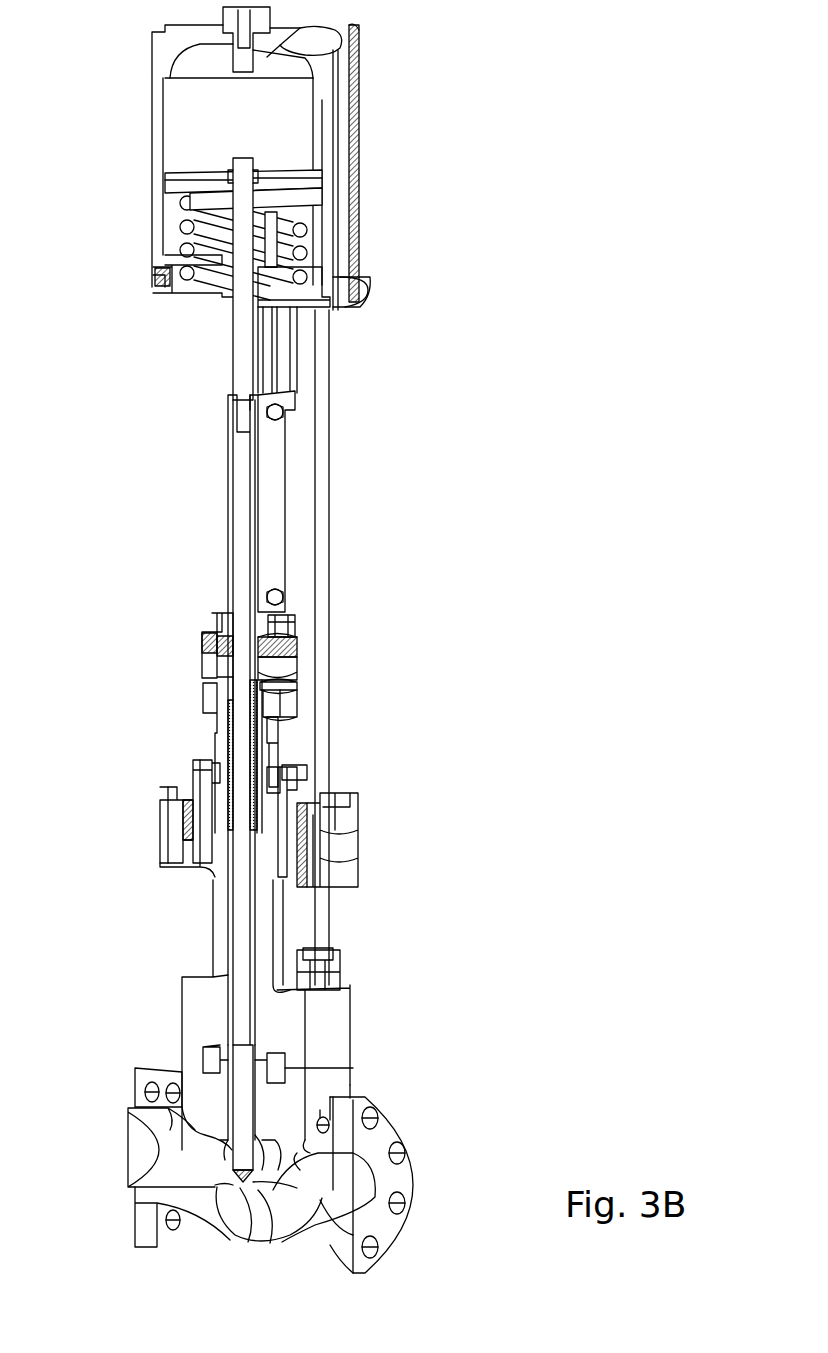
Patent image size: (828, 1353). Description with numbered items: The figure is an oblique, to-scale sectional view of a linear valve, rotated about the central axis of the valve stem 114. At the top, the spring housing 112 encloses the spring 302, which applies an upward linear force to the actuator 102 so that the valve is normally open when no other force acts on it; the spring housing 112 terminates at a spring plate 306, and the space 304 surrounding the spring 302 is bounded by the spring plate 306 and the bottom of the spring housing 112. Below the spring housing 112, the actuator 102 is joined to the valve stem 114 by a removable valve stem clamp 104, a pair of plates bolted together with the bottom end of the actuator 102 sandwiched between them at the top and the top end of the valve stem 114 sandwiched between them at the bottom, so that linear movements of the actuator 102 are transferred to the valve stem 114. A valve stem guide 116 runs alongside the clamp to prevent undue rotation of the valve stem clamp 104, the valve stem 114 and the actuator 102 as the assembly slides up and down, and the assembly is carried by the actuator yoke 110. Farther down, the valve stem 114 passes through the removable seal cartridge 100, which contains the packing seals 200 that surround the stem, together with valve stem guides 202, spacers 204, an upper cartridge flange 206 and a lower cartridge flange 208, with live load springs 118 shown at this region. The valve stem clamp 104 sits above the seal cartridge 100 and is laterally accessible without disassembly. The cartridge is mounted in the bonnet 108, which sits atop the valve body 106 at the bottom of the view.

The seal cartridge 100 is at (448, 680).
The actuator 102 is at (230, 339).
The valve stem clamp 104 is at (228, 474).
The valve body 106 is at (355, 1085).
The bonnet 108 is at (213, 941).
The actuator yoke 110 is at (330, 485).
The spring housing 112 is at (361, 121).
The valve stem 114 is at (270, 923).
The valve stem guide 116 is at (300, 357).
The live load springs 118 is at (300, 651).
The packing seals 200 is at (263, 722).
The valve stem guides 202 is at (260, 692).
The spacers 204 is at (260, 759).
The upper cartridge flange 206 is at (203, 695).
The lower cartridge flange 208 is at (195, 780).
The spring 302 is at (320, 225).
The space 304 is at (180, 215).
The spring plate 306 is at (290, 178).